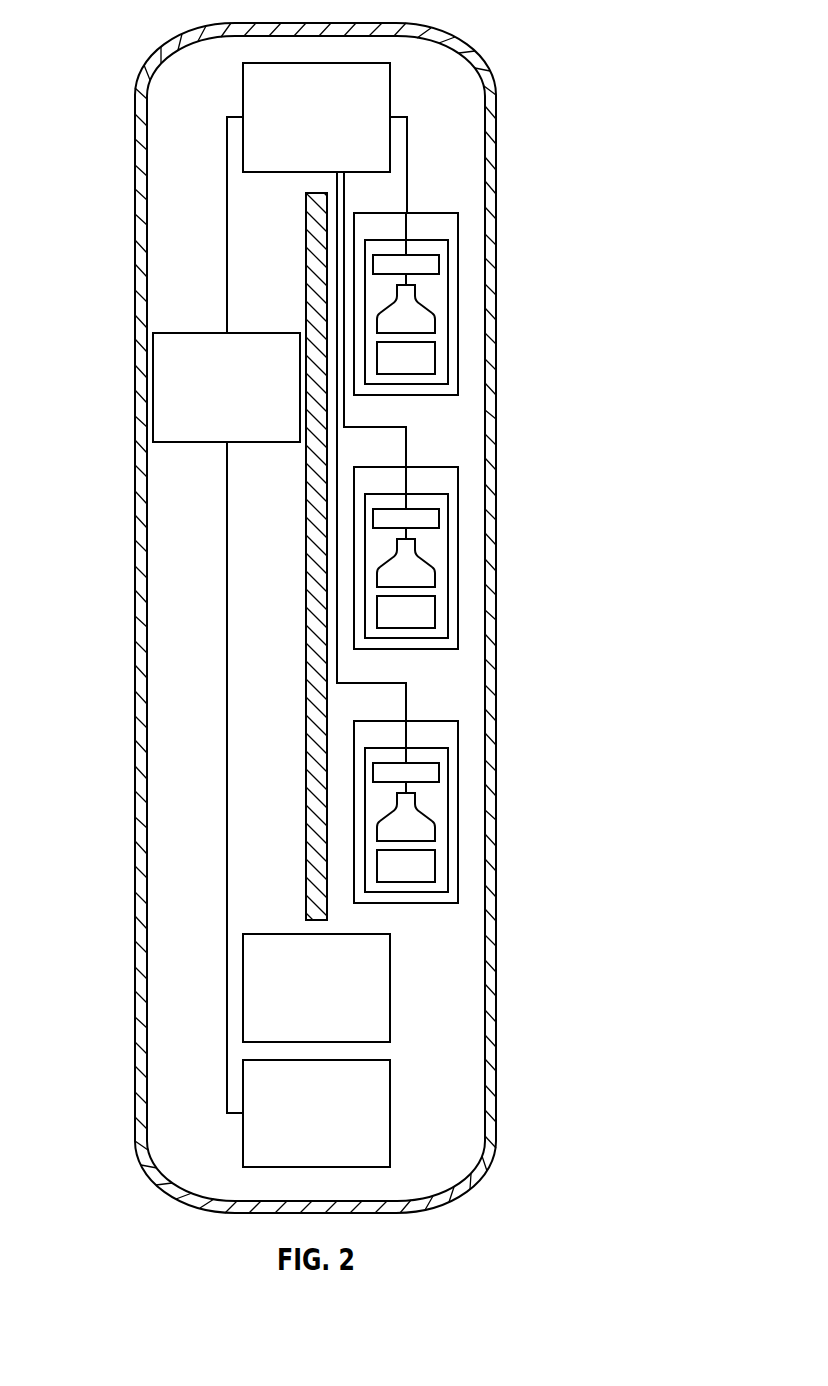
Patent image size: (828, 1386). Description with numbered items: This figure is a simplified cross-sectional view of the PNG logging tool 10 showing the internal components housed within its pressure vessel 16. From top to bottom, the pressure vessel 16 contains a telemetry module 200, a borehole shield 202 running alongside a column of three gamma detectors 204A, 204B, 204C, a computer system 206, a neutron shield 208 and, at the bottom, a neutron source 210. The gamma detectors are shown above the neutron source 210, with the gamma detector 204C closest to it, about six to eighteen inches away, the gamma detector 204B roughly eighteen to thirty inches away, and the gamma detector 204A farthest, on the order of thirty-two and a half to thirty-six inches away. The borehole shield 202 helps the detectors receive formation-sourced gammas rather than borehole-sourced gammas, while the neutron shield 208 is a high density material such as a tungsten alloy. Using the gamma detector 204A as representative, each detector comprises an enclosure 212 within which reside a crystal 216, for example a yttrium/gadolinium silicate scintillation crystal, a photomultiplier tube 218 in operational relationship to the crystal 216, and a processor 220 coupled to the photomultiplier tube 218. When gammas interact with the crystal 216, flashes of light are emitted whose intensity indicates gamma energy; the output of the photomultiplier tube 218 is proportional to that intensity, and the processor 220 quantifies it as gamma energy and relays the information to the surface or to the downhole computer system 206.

The PNG logging tool 10 is at (541, 31).
The pressure vessel 16 is at (498, 165).
The telemetry module 200 is at (298, 173).
The borehole shield 202 is at (305, 285).
The gamma detector 204A is at (467, 308).
The gamma detector 204B is at (459, 515).
The gamma detector 204C is at (459, 757).
The computer system 206 is at (248, 433).
The neutron shield 208 is at (391, 988).
The neutron source 210 is at (391, 1113).
The enclosure 212 is at (452, 223).
The crystal 216 is at (418, 367).
The photomultiplier tube 218 is at (435, 326).
The processor 220 is at (430, 267).